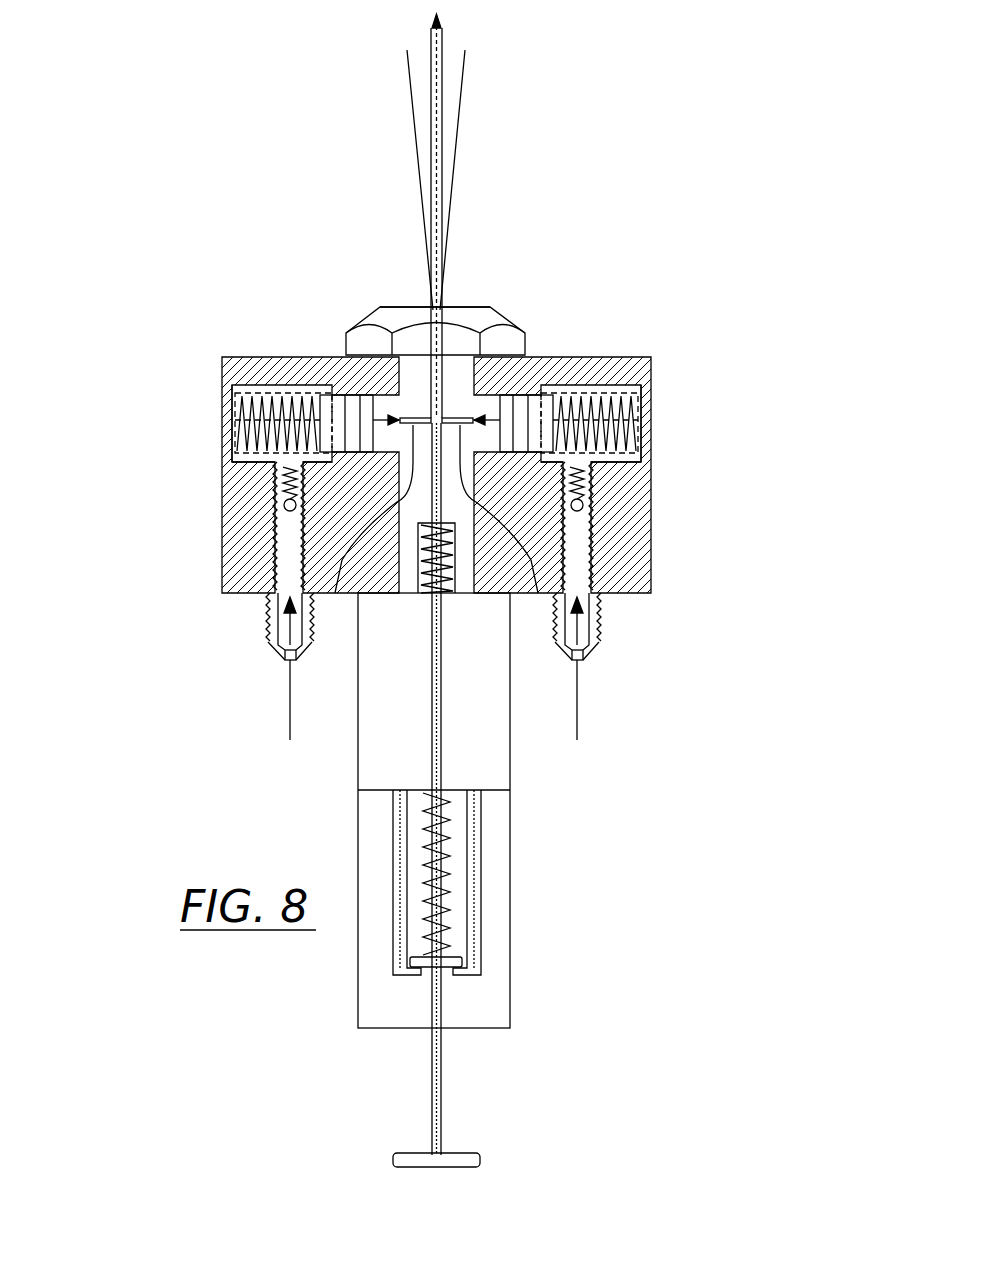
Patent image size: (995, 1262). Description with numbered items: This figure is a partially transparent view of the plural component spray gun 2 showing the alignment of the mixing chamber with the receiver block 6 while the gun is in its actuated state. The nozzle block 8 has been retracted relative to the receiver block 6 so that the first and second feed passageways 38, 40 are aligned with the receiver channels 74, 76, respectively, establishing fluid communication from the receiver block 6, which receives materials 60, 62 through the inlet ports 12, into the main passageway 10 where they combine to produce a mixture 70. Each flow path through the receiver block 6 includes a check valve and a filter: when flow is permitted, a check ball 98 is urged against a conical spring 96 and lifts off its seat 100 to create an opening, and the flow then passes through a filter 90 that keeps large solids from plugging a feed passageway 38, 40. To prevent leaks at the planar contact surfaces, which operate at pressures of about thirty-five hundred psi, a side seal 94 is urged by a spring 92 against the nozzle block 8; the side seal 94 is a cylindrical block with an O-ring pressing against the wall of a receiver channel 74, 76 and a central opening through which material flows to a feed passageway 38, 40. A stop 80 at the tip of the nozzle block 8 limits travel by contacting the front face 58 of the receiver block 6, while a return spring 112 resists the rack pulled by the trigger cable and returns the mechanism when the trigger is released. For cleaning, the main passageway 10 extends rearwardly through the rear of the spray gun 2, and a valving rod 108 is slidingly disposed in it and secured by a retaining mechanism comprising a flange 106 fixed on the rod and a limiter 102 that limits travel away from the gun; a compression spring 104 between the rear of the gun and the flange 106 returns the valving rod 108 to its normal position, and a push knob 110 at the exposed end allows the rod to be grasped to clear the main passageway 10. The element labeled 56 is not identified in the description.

The plural component spray gun 2 is at (698, 382).
The receiver block 6 is at (222, 410).
The nozzle block 8 is at (362, 328).
The main passageway 10 is at (441, 320).
The inlet port 12 is at (285, 660).
The first feed passageway 38 is at (335, 593).
The second feed passageway 40 is at (538, 593).
The return spring 56 is at (430, 575).
The front face of the receiver block 58 is at (597, 298).
The material 60 is at (290, 722).
The material 62 is at (578, 722).
The mixture 70 is at (436, 65).
The receiver channel 74 is at (352, 395).
The receiver channel 76 is at (505, 395).
The stop 80 is at (503, 313).
The filter 90 is at (247, 463).
The spring 92 is at (228, 385).
The side seal 94 is at (248, 385).
The conical spring 96 is at (280, 478).
The check ball 98 is at (283, 507).
The seat 100 is at (275, 522).
The limiter 102 is at (481, 838).
The compression spring 104 is at (450, 905).
The flange 106 is at (465, 962).
The valving rod 108 is at (442, 1050).
The push knob 110 is at (462, 1153).
The return spring 112 is at (330, 395).